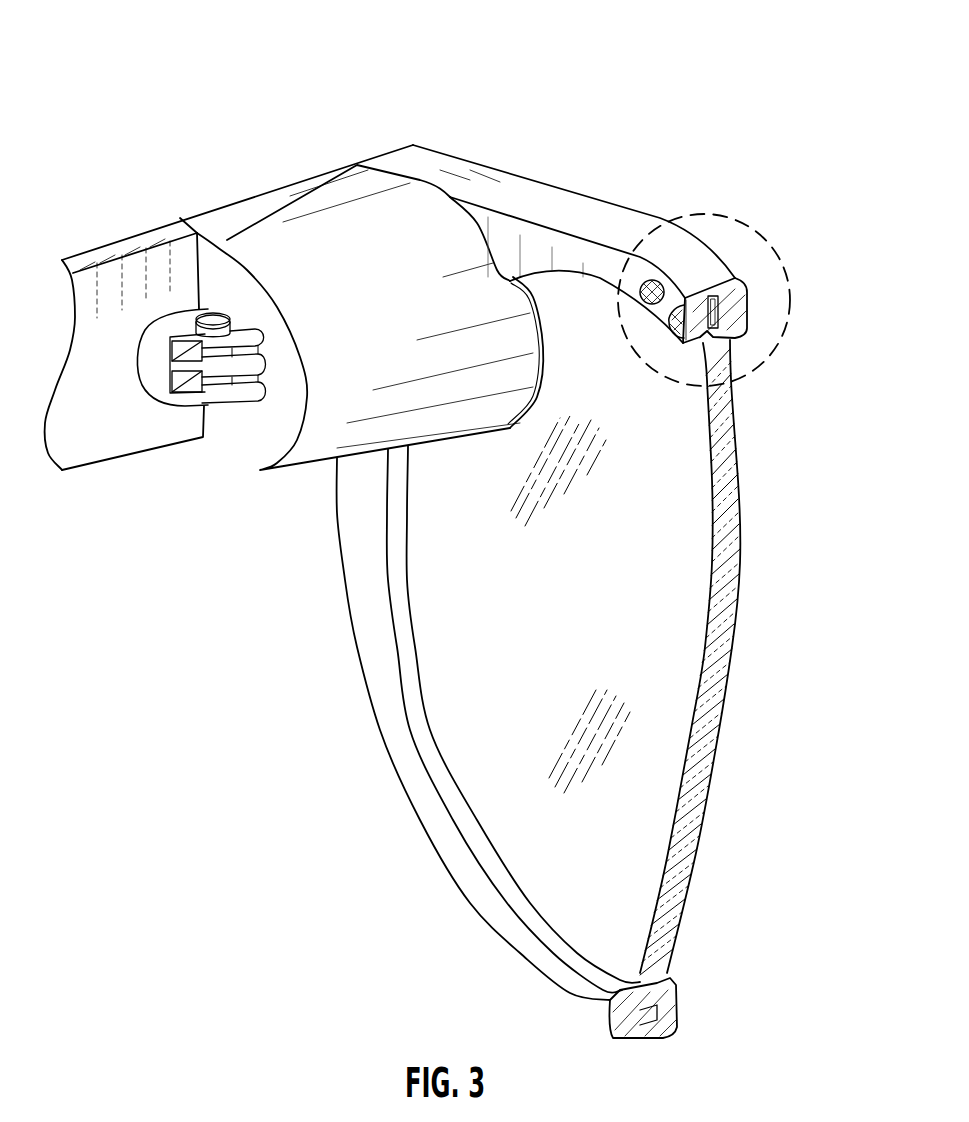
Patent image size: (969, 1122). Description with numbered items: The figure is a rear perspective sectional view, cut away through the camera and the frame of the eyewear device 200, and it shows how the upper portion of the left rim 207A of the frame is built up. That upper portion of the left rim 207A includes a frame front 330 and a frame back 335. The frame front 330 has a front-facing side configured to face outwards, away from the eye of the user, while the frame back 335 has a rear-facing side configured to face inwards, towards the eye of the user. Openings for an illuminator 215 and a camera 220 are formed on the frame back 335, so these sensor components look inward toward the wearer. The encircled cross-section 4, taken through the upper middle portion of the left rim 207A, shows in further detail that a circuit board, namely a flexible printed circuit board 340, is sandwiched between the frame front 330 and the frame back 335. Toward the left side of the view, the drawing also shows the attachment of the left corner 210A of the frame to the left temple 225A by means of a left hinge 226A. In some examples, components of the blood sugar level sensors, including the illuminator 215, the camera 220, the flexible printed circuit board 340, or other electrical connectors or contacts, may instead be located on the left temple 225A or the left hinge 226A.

The eyewear device 200 is at (170, 36).
The left corner 210A is at (240, 208).
The left temple 225A is at (73, 458).
The left hinge 226A is at (160, 383).
The frame back 335 is at (535, 230).
The illuminator 215 is at (648, 283).
The camera 220 is at (677, 328).
The frame front 330 is at (748, 288).
The flexible printed circuit board 340 is at (720, 310).
The encircled cross-section 4 is at (791, 292).
The left rim 207A is at (431, 814).